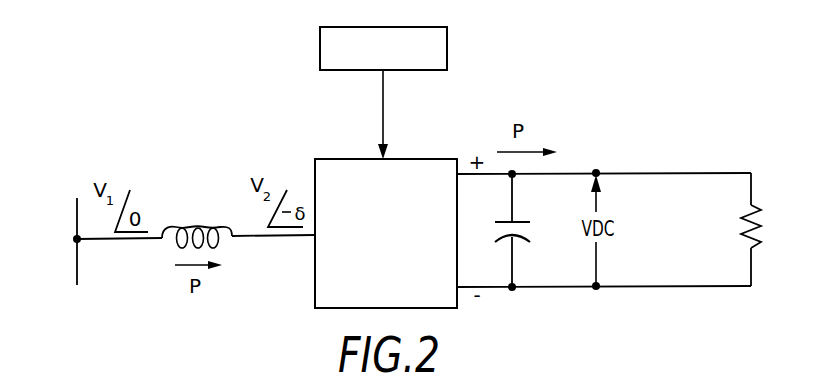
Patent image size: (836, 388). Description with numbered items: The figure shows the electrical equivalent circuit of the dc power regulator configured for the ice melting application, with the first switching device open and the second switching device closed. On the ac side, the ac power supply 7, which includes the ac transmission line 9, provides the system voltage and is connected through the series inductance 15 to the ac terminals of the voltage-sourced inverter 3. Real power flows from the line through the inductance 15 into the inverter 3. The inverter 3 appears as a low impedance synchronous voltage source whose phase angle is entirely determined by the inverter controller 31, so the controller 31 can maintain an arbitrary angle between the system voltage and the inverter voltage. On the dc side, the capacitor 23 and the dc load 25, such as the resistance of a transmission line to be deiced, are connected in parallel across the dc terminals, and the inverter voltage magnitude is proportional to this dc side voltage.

The ac power supply 7 is at (57, 213).
The ac transmission line 9 is at (78, 199).
The inductance 15 is at (208, 227).
The voltage-sourced inverter 3 is at (412, 159).
The inverter controller 31 is at (450, 43).
The capacitor 23 is at (495, 230).
The dc load 25 is at (757, 208).